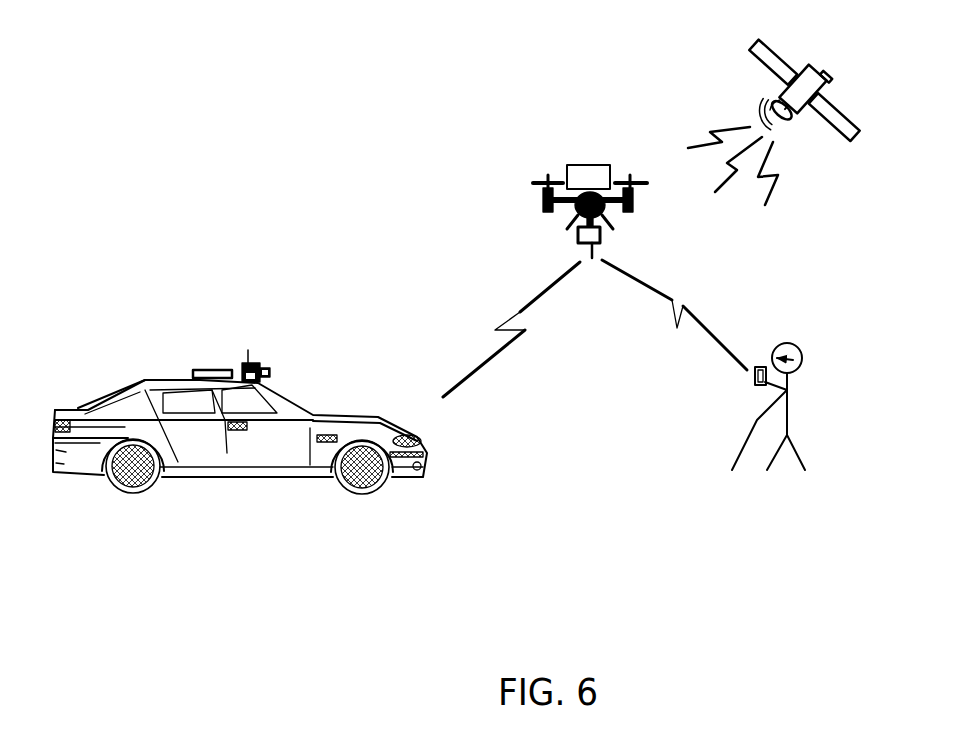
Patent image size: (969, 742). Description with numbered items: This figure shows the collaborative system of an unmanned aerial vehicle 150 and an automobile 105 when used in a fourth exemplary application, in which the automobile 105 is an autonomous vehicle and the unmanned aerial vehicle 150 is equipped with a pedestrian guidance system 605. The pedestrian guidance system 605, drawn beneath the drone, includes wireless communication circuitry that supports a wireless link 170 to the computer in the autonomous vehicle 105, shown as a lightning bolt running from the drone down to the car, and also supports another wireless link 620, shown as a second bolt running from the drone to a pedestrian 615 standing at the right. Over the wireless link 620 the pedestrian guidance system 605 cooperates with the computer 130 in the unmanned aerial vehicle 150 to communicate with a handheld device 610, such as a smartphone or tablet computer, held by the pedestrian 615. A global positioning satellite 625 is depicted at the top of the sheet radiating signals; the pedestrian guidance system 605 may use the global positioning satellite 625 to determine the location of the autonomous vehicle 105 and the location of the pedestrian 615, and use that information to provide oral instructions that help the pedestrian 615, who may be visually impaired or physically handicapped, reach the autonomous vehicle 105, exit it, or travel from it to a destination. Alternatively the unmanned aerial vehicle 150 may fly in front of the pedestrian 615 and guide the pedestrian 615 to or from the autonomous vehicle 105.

The automobile 105 is at (68, 357).
The computer 130 is at (576, 186).
The unmanned aerial vehicle 150 is at (545, 216).
The pedestrian guidance system 605 is at (578, 246).
The wireless link 170 is at (518, 311).
The wireless link 620 is at (675, 300).
The handheld device 610 is at (755, 385).
The pedestrian 615 is at (784, 406).
The global positioning satellite 625 is at (745, 86).